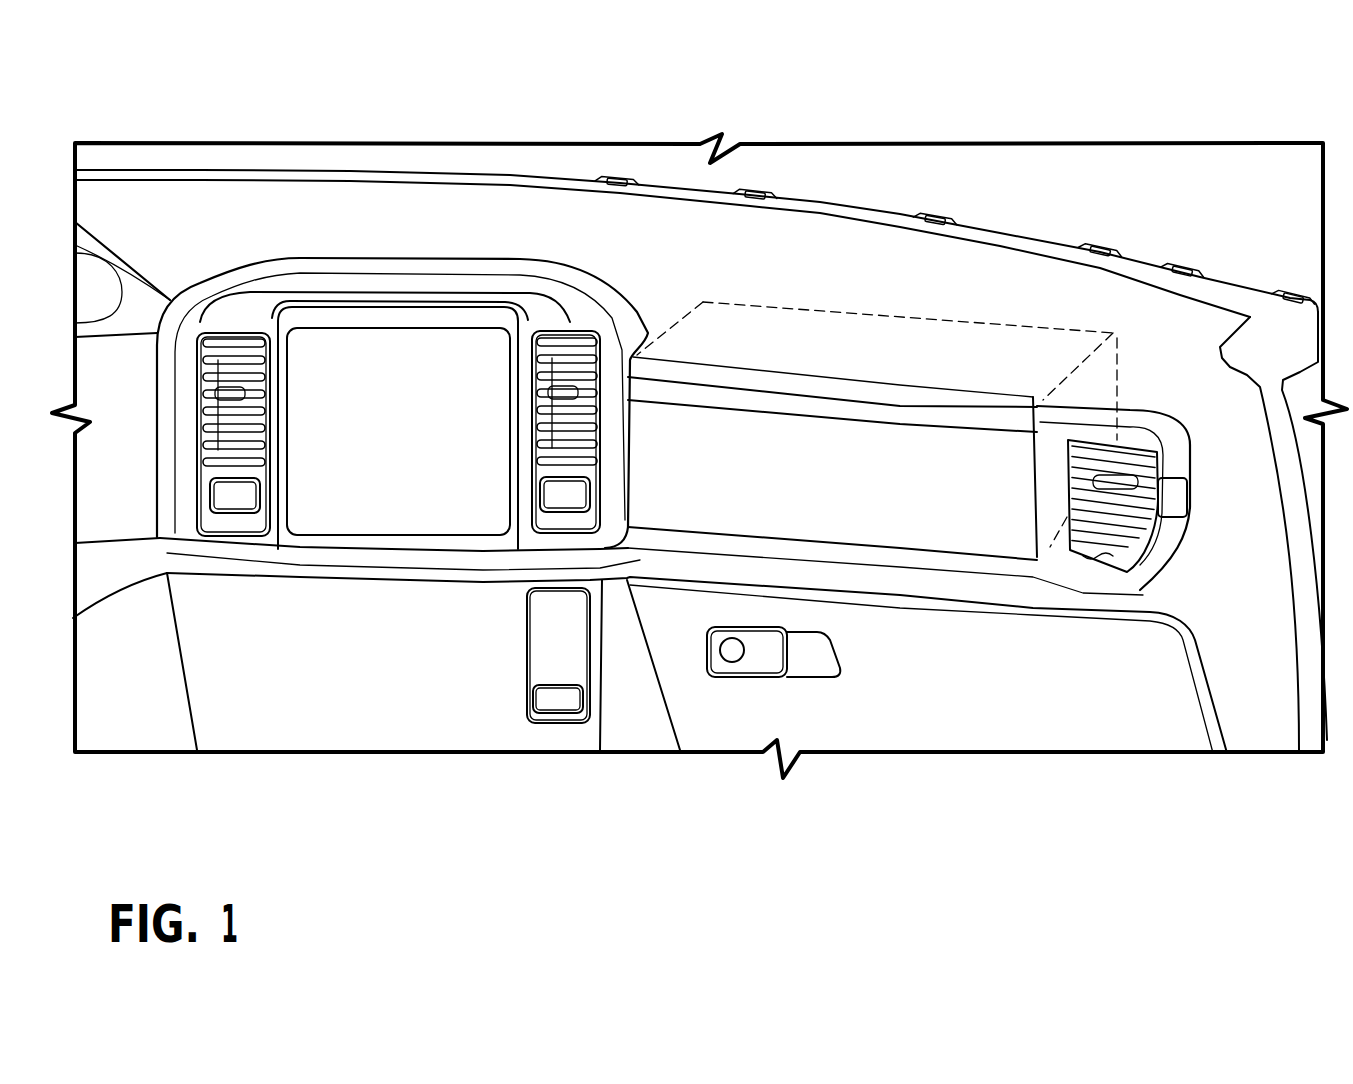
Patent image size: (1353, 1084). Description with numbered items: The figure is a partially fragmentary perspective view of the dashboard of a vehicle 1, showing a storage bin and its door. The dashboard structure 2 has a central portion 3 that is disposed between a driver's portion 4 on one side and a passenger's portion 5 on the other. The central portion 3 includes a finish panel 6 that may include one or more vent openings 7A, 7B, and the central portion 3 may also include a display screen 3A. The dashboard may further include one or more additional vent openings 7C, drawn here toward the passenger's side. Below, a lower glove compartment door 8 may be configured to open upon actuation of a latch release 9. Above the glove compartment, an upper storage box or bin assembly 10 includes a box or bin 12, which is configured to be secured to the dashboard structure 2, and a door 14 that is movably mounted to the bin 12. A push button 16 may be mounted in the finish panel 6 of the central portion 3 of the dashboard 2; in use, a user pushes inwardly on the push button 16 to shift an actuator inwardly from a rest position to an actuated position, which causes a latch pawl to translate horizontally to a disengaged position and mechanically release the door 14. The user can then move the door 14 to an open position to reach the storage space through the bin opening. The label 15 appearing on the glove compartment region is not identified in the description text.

The vehicle 1 is at (1217, 238).
The dashboard structure 2 is at (963, 218).
The central portion 3 is at (410, 243).
The display screen 3A is at (381, 433).
The driver's portion 4 is at (128, 213).
The passenger's portion 5 is at (842, 253).
The finish panel 6 is at (547, 324).
The vent opening 7A is at (228, 358).
The vent opening 7B is at (573, 370).
The additional vent opening 7C is at (1138, 480).
The lower glove compartment door 8 is at (918, 697).
The latch release 9 is at (762, 653).
The upper storage box or bin assembly 10 is at (803, 367).
The box or bin 12 is at (1113, 333).
The door 14 is at (983, 392).
The glove box lid 15 is at (818, 497).
The push button 16 is at (558, 497).